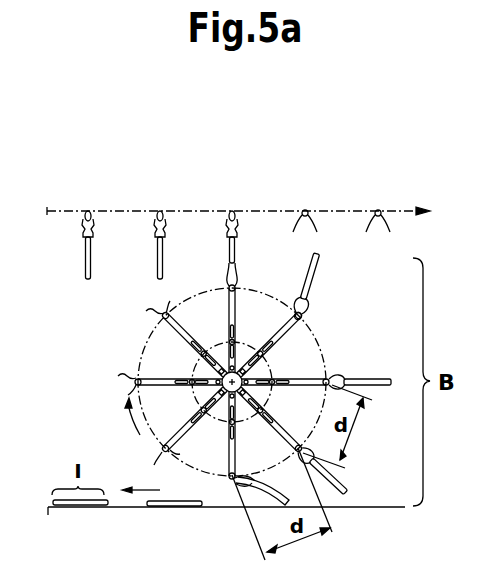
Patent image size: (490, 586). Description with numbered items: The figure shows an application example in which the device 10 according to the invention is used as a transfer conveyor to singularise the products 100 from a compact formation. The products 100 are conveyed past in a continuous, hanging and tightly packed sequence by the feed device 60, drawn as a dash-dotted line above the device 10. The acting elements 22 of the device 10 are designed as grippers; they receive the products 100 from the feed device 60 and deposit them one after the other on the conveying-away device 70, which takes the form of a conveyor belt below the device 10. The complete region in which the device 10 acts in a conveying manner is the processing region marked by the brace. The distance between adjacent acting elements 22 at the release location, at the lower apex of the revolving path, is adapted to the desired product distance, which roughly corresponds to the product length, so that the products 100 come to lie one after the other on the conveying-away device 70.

The device 10 is at (121, 306).
The acting elements 22 is at (304, 314).
The feed device 60 is at (331, 210).
The conveying-away device 70 is at (138, 508).
The products 100 is at (236, 243).